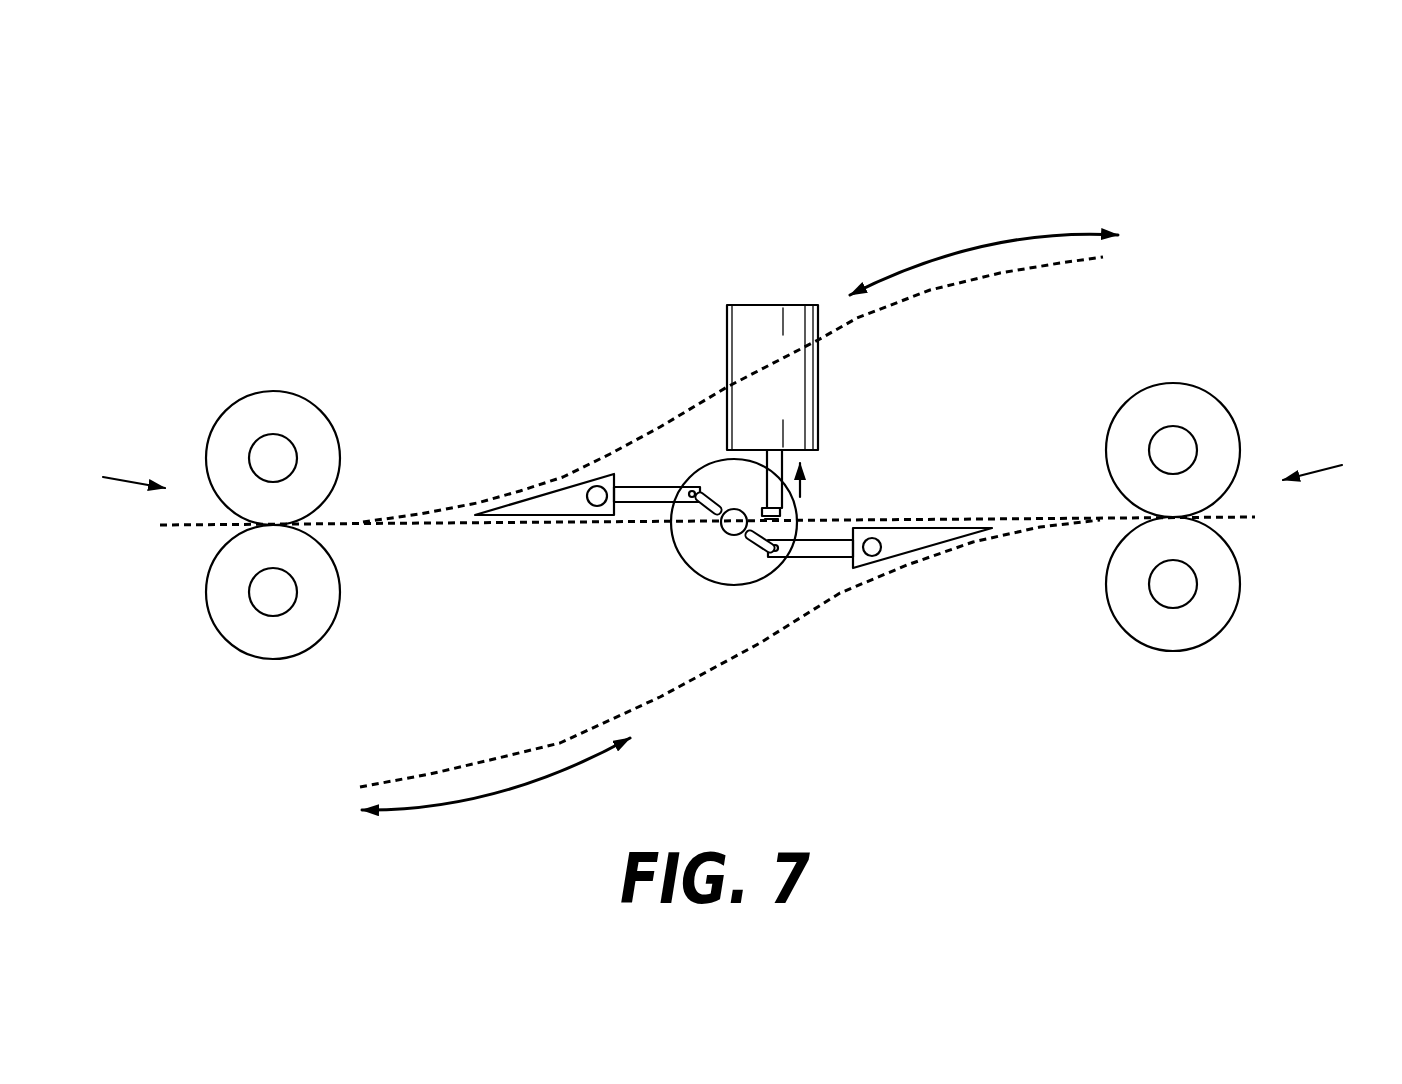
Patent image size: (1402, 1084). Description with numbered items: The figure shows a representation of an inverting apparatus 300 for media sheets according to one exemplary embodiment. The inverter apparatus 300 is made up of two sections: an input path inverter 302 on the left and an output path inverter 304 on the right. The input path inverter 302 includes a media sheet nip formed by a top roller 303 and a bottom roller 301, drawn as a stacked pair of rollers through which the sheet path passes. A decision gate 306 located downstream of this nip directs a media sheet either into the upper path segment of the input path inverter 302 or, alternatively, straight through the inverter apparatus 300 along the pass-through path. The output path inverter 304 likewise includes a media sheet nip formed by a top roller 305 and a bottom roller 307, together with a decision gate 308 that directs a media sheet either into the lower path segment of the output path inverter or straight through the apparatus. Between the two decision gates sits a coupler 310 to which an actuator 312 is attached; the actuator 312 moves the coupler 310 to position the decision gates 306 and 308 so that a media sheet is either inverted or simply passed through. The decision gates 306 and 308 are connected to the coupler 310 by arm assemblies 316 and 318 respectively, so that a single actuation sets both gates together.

The inverter apparatus 300 is at (470, 207).
The bottom roller 301 is at (242, 653).
The input path inverter 302 is at (114, 477).
The top roller 303 is at (242, 397).
The output path inverter 304 is at (1335, 466).
The top roller 305 is at (1203, 388).
The decision gate 306 is at (555, 503).
The bottom roller 307 is at (1205, 643).
The decision gate 308 is at (908, 537).
The coupler 310 is at (690, 570).
The actuator 312 is at (820, 380).
The arm assembly 316 is at (647, 485).
The arm assembly 318 is at (812, 555).